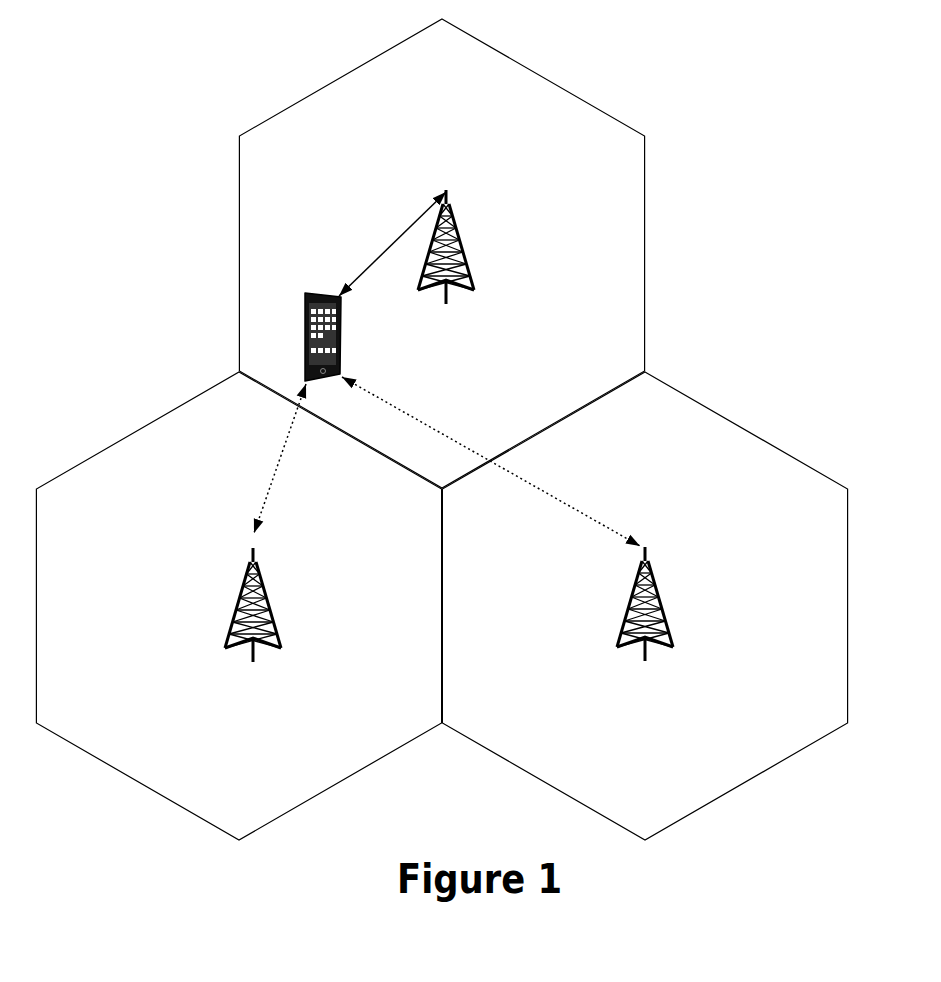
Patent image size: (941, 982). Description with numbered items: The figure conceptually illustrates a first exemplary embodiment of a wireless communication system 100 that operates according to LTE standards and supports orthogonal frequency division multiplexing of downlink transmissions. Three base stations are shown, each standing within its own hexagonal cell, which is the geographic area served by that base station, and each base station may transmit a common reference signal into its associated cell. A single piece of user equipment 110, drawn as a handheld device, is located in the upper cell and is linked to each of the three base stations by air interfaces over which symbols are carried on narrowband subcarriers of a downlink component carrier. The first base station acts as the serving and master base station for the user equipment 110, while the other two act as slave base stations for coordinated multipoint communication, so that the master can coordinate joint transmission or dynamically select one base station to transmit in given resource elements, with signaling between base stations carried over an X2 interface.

The wireless communication system 100 is at (827, 128).
The user equipment 110 is at (303, 338).